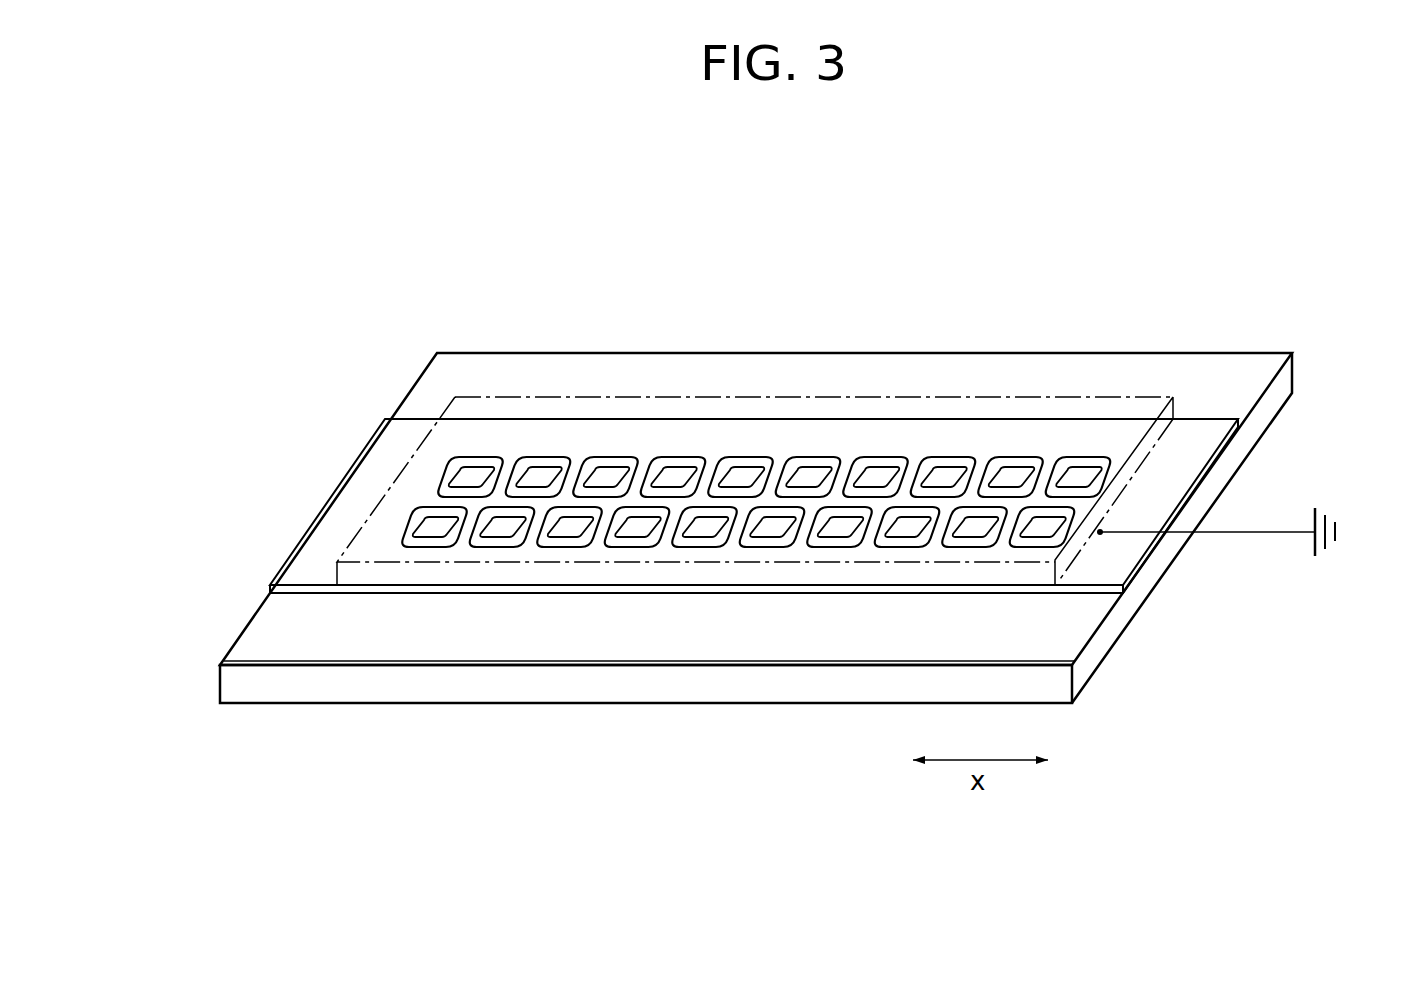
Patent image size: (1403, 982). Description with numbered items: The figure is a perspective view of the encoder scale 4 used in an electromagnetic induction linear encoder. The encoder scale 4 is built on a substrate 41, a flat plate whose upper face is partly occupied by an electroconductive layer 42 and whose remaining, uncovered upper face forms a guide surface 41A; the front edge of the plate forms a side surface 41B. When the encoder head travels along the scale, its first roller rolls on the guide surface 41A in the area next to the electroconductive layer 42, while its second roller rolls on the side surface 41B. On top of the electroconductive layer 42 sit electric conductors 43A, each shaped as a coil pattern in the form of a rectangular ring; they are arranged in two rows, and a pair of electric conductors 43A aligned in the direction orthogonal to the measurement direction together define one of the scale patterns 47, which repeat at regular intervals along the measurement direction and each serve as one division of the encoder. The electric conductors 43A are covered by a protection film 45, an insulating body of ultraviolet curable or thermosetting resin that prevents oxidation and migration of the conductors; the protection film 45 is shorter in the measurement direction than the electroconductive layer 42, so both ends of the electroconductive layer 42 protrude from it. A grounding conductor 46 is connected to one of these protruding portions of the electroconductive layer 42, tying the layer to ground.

The encoder scale 4 is at (805, 290).
The substrate 41 is at (736, 732).
The guide surface 41A is at (434, 383).
The side surface 41B is at (625, 692).
The electroconductive layer 42 is at (1193, 453).
The electric conductor 43A is at (417, 517).
The protection film 45 is at (947, 397).
The grounding conductor 46 is at (1245, 535).
The scale patterns 47 is at (380, 547).